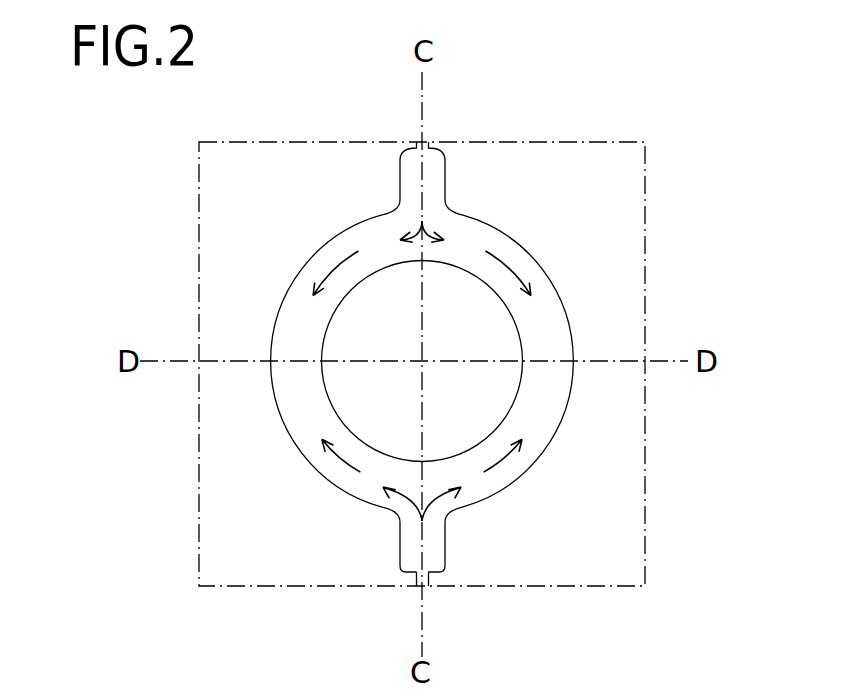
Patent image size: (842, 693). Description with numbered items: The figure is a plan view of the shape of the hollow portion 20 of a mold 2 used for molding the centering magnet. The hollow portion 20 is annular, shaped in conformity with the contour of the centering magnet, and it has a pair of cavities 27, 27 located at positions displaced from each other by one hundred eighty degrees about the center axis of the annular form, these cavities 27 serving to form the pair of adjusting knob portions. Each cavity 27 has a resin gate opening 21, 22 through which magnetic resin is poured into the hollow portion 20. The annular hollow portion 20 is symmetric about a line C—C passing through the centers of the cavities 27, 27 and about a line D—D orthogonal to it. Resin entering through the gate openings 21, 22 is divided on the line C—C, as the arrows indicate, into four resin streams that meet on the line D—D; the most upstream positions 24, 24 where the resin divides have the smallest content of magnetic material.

The mold 2 is at (643, 197).
The hollow portion 20 is at (497, 248).
The resin gate opening 21 is at (423, 139).
The resin gate opening 22 is at (421, 586).
The most upstream position 24 is at (428, 222).
The cavity 27 is at (398, 188).